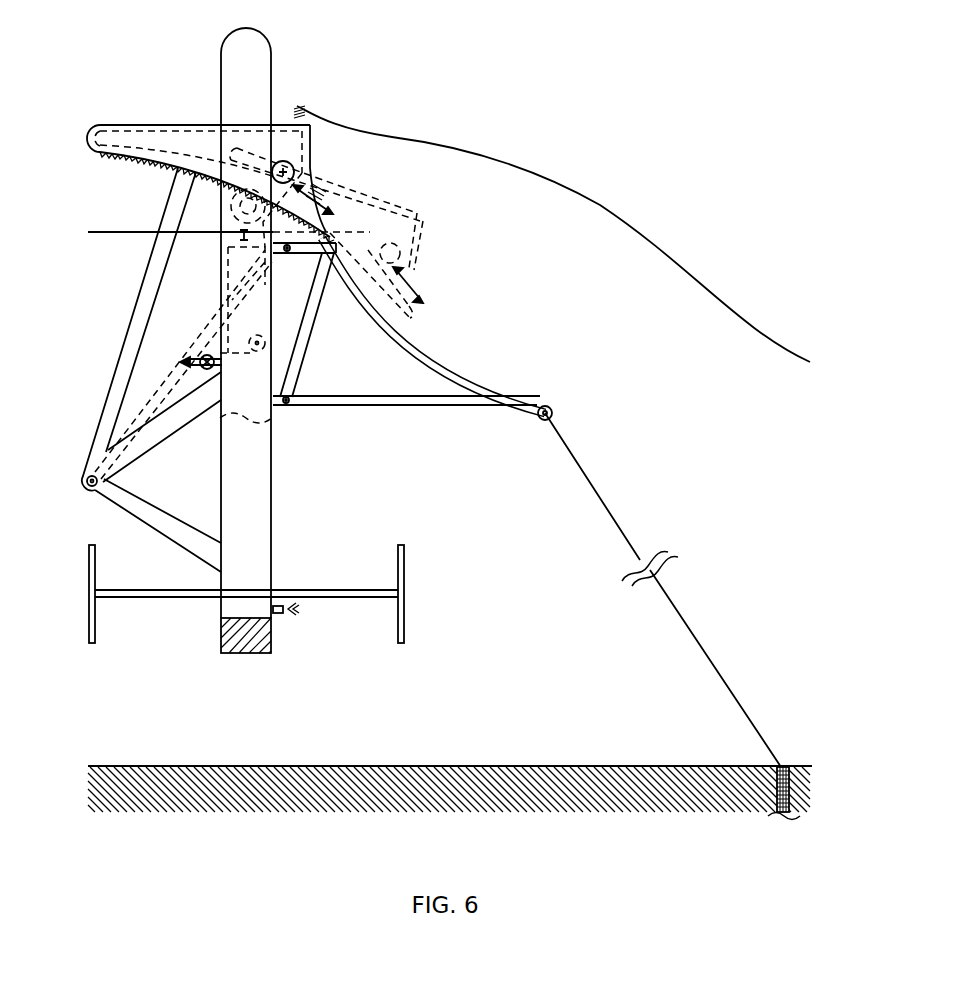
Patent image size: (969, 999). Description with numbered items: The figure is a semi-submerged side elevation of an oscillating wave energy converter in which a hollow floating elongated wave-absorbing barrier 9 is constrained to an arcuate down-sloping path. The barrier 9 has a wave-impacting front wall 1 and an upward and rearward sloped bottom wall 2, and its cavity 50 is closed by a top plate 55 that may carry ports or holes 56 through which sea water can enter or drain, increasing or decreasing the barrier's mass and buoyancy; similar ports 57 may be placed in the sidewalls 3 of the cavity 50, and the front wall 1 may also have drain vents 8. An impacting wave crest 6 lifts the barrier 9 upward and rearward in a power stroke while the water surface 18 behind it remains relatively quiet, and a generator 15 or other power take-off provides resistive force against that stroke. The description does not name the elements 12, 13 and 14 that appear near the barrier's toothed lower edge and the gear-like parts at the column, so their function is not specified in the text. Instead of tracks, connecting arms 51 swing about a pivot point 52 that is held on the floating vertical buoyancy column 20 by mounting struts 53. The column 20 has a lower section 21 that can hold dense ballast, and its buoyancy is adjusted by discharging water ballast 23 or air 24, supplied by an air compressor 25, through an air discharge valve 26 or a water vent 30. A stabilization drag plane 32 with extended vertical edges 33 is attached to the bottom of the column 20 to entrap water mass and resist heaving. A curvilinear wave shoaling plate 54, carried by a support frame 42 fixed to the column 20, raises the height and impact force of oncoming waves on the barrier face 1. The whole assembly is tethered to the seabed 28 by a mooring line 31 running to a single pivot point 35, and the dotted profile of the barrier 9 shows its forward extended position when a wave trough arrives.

The front wall 1 is at (310, 147).
The sloped bottom wall 2 is at (118, 157).
The sidewalls 3 is at (165, 127).
The wave crest 6 is at (307, 112).
The drain vents 8 is at (327, 199).
The floating elongated buoyant barrier 9 is at (175, 167).
The teeth 12 is at (146, 162).
The gear 13 is at (236, 203).
The bearing 14 is at (237, 222).
The generator 15 is at (230, 276).
The water surface 18 is at (115, 233).
The floating vertical buoyancy column 20 is at (289, 323).
The lower section 21 is at (262, 645).
The water ballast level 23 is at (272, 425).
The air 24 is at (263, 377).
The air compressor 25 is at (266, 343).
The air discharge valve 26 is at (206, 355).
The seabed 28 is at (578, 766).
The water vent 30 is at (284, 614).
The mooring line 31 is at (686, 626).
The stabilization drag plane 32 is at (325, 590).
The extended vertical edges 33 is at (96, 565).
The single pivot point 35 is at (783, 766).
The support frame 42 is at (298, 256).
The cavity 50 is at (162, 138).
The connecting arm 51 is at (133, 313).
The pivot point 52 is at (92, 486).
The mounting strut 53 is at (138, 447).
The wave shoaling plate 54 is at (440, 372).
The top plate 55 is at (215, 125).
The ports 56 is at (197, 125).
The ports 57 is at (284, 161).